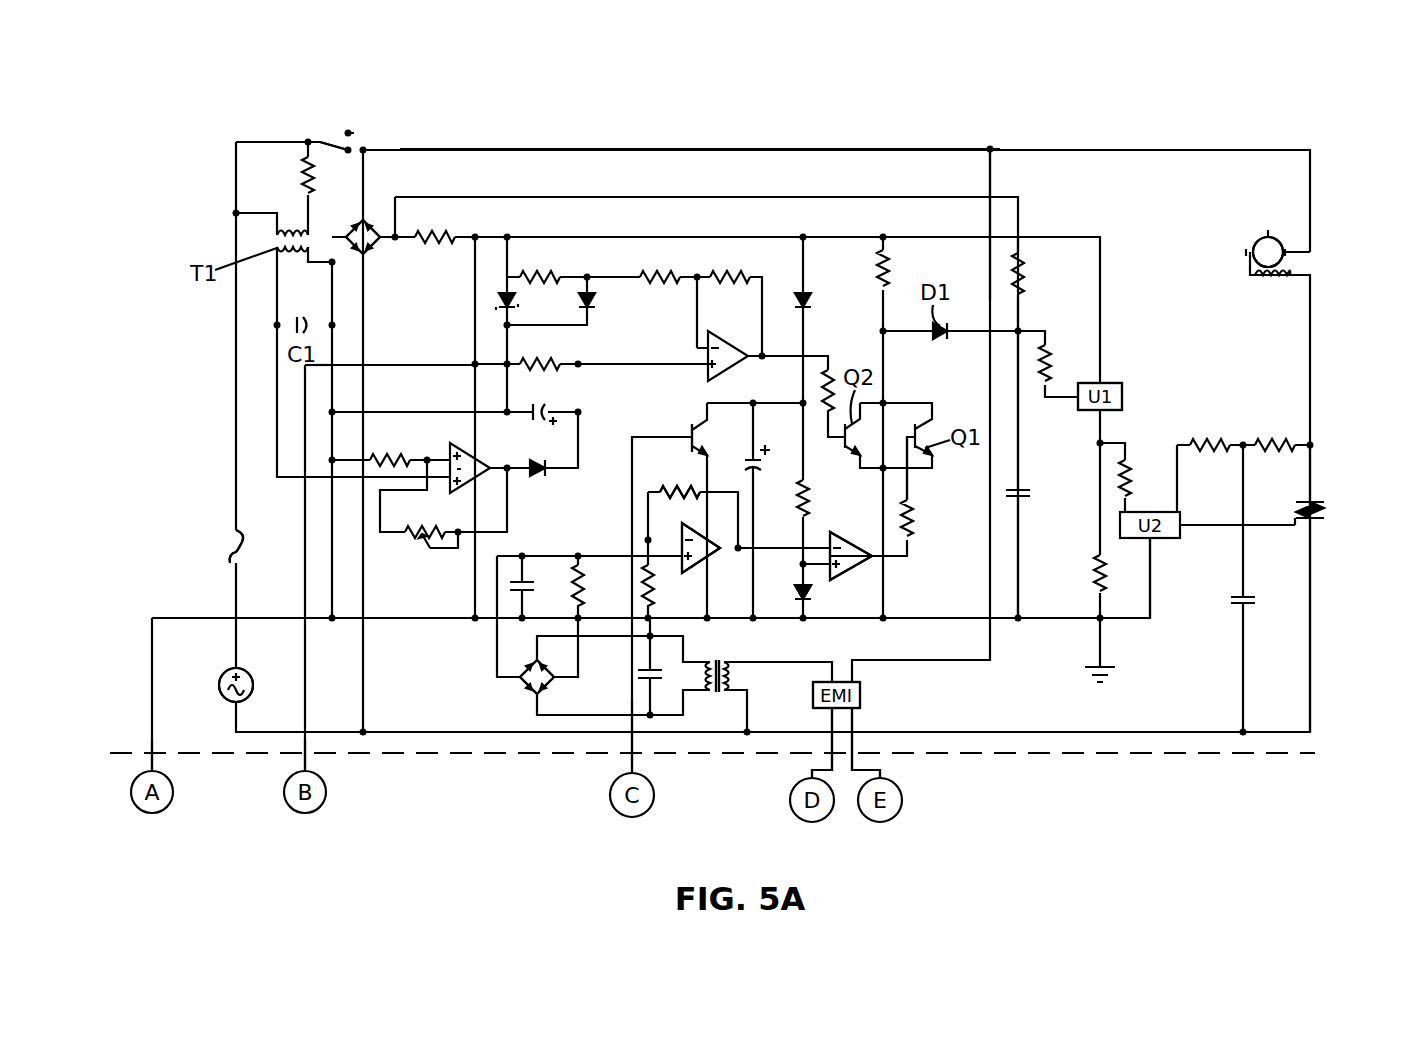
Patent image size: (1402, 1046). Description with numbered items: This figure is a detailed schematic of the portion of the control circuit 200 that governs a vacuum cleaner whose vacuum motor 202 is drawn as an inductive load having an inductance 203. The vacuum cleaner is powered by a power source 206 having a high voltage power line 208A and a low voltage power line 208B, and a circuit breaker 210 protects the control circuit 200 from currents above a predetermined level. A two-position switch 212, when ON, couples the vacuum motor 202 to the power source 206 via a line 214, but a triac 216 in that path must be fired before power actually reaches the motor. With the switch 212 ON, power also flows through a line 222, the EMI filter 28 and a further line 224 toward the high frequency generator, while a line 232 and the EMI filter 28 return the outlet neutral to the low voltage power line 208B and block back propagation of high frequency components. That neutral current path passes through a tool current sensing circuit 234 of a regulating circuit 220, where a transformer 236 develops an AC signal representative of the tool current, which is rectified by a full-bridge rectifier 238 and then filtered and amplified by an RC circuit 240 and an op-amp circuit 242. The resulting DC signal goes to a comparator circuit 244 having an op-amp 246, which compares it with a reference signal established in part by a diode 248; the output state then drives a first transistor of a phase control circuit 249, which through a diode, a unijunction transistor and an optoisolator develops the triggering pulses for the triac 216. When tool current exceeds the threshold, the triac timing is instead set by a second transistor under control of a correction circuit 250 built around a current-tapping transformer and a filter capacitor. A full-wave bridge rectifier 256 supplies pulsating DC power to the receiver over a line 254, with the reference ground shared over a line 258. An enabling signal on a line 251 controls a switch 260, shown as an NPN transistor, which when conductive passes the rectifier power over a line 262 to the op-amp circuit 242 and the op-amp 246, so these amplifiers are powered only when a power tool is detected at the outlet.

The two-position switch 212 is at (363, 138).
The control circuit 200 is at (740, 141).
The line 214 is at (537, 147).
The regulating circuit 220 is at (940, 141).
The line 222 is at (995, 182).
The vacuum motor 202 is at (1262, 238).
The inductance 203 is at (1258, 280).
The phase control circuit 249 is at (1132, 367).
The triac 216 is at (1322, 506).
The full-wave bridge rectifier 256 is at (376, 250).
The correction circuit 250 is at (435, 388).
The circuit breaker 210 is at (231, 556).
The high voltage power line 208A is at (236, 602).
The power source 206 is at (222, 678).
The low voltage power line 208B is at (236, 718).
The line 258 is at (152, 762).
The line 254 is at (308, 765).
The RC circuit 240 is at (550, 555).
The op-amp circuit 242 is at (686, 577).
The switch 260 is at (702, 428).
The line 262 is at (707, 468).
The comparator circuit 244 is at (849, 532).
The op-amp 246 is at (848, 574).
The diode 248 is at (808, 600).
The transformer 236 is at (726, 663).
The full-bridge rectifier 238 is at (528, 687).
The line 251 is at (628, 740).
The tool current sensing circuit 234 is at (722, 736).
The line 232 is at (812, 772).
The EMI filter 28 is at (862, 692).
The line 224 is at (885, 775).